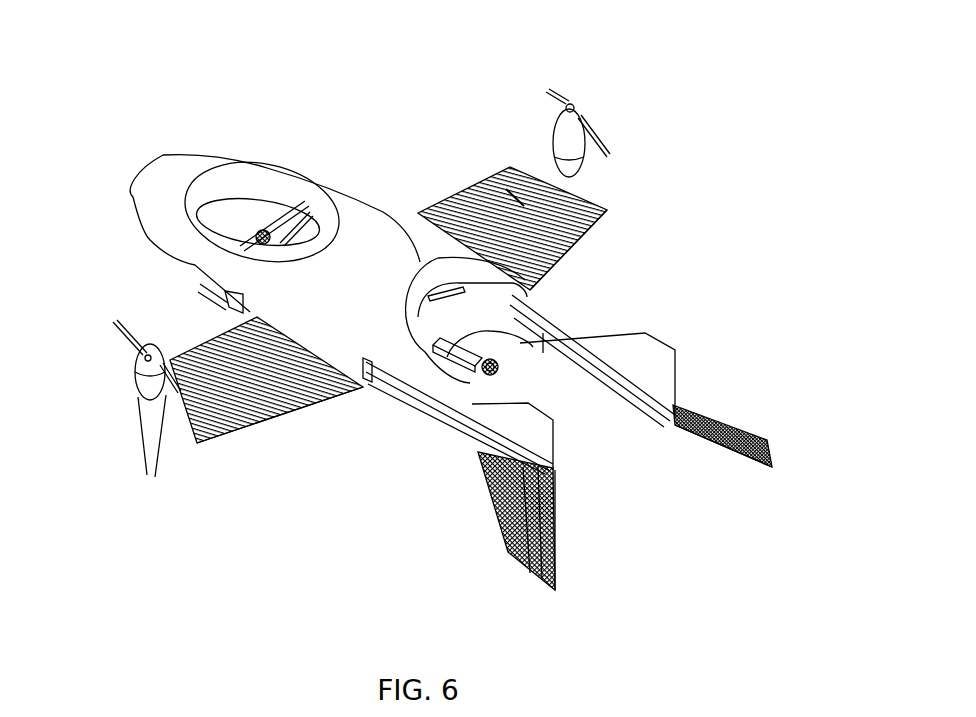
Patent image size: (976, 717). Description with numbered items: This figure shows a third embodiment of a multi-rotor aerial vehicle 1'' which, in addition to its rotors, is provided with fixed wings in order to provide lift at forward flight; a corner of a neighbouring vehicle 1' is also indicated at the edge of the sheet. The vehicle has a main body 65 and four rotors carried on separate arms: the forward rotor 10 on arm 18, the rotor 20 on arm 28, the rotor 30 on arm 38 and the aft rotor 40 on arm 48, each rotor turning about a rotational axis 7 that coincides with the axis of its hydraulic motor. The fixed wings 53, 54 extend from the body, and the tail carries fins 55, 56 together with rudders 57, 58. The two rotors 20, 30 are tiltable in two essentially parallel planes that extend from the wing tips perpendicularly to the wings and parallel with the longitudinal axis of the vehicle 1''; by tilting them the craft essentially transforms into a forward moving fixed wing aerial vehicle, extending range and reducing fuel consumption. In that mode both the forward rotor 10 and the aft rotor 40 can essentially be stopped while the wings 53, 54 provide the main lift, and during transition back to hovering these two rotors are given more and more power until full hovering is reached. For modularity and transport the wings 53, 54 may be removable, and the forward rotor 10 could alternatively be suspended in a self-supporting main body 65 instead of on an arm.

The multi-rotor aerial vehicle (third embodiment) 1'' is at (442, 225).
The aircraft (first embodiment) 1' is at (32, 687).
The rotational axis 7 is at (572, 108).
The forward rotor 10 is at (247, 245).
The arm 18 is at (313, 268).
The rotor 20 is at (550, 102).
The arm 28 is at (495, 178).
The rotor 30 is at (178, 387).
The arm 38 is at (247, 362).
The aft rotor 40 is at (513, 343).
The arm 48 is at (460, 360).
The fixed wing 53 is at (253, 380).
The fixed wing 54 is at (575, 220).
The fin 55 is at (490, 480).
The fin 56 is at (725, 430).
The rudder 57 is at (550, 525).
The rudder 58 is at (698, 430).
The main body 65 is at (383, 260).